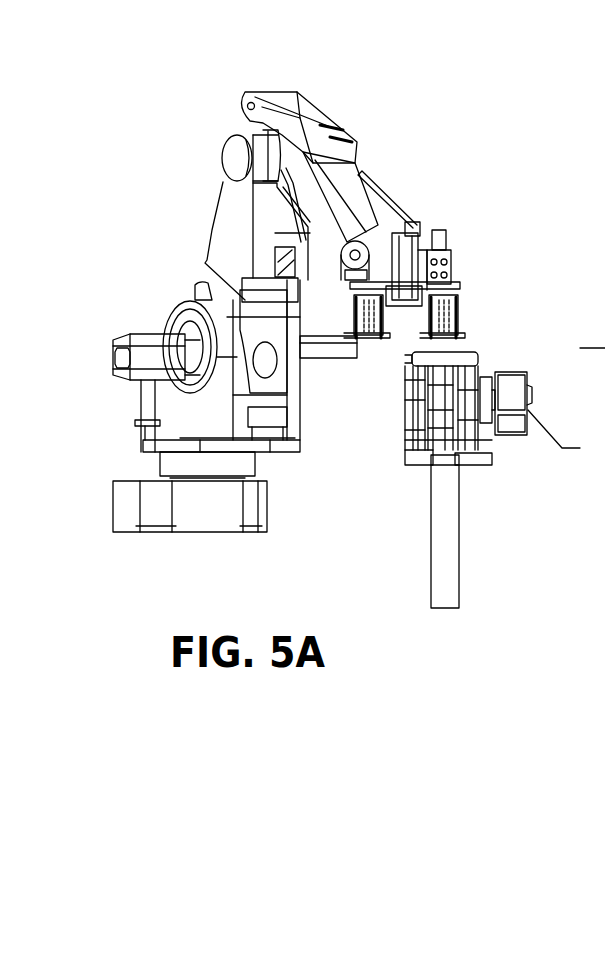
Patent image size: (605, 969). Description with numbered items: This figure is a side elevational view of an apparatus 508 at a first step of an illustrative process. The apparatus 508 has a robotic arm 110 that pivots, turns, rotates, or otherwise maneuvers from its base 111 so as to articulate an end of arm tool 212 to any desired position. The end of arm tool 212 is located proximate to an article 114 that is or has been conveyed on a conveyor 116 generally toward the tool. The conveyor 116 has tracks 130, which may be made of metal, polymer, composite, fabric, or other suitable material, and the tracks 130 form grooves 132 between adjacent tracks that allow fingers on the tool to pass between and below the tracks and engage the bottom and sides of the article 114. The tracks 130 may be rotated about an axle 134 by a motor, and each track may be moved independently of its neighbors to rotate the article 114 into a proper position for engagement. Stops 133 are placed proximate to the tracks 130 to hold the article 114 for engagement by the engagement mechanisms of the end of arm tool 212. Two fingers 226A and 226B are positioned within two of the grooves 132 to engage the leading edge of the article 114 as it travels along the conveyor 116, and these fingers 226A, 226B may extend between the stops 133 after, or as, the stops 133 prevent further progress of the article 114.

The apparatus 508 is at (327, 79).
The robotic arm 110 is at (286, 250).
The base 111 is at (190, 513).
The end of arm tool 212 is at (462, 281).
The finger 226A is at (373, 331).
The finger 226B is at (492, 323).
The article 114 is at (477, 356).
The conveyor 116 is at (375, 457).
The stops 133 is at (428, 364).
The axle 134 is at (430, 390).
The tracks 130 is at (510, 425).
The grooves 132 is at (483, 520).